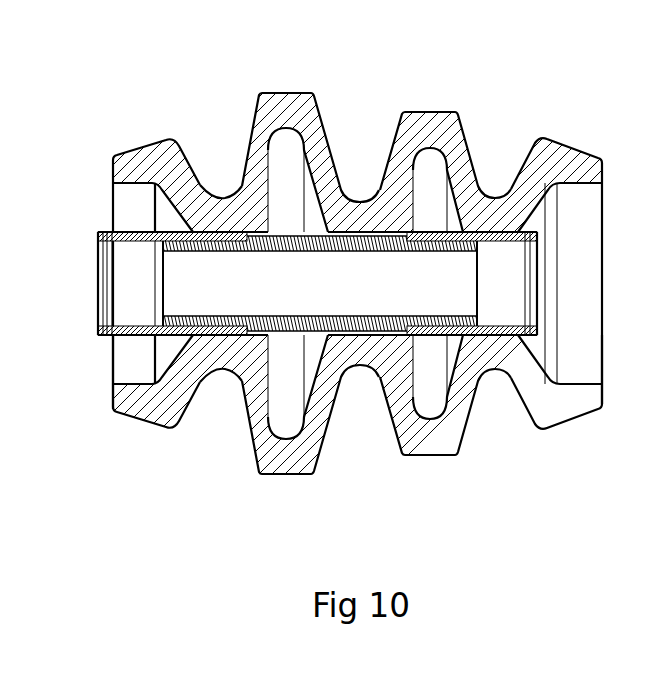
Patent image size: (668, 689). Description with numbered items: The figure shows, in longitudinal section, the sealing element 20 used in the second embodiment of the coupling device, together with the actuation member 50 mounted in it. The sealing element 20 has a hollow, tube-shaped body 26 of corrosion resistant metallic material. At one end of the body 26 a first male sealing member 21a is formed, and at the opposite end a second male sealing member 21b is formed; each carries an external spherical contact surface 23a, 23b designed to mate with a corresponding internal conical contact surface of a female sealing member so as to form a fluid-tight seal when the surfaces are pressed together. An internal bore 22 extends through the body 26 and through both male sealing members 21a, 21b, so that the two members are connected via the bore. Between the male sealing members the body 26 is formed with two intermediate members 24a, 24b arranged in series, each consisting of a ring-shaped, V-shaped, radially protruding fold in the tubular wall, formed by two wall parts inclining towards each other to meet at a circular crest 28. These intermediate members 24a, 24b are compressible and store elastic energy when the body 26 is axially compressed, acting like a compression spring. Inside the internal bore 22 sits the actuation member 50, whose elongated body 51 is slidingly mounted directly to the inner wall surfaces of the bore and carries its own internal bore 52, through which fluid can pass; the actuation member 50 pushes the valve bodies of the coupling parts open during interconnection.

The sealing element 20 is at (334, 289).
The crest 28 is at (288, 98).
The second male sealing member 21b is at (140, 150).
The body 26 is at (217, 207).
The first male sealing member 21a is at (575, 158).
The internal bore 22 is at (583, 240).
The internal bore 52 is at (177, 282).
The elongated body 51 is at (318, 248).
The actuation member 50 is at (298, 322).
The external spherical contact surface 23b is at (135, 415).
The intermediate member 24b is at (282, 501).
The intermediate member 24a is at (436, 481).
The external spherical contact surface 23a is at (578, 418).